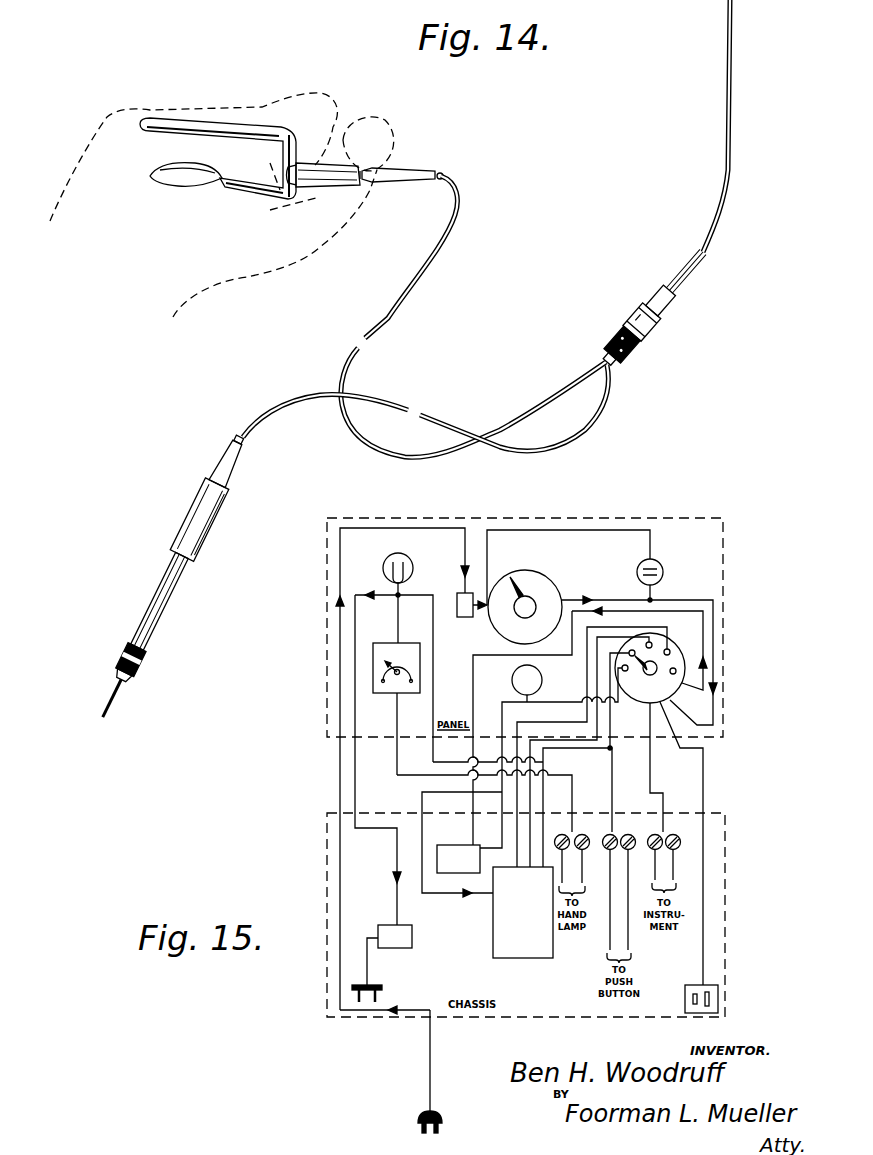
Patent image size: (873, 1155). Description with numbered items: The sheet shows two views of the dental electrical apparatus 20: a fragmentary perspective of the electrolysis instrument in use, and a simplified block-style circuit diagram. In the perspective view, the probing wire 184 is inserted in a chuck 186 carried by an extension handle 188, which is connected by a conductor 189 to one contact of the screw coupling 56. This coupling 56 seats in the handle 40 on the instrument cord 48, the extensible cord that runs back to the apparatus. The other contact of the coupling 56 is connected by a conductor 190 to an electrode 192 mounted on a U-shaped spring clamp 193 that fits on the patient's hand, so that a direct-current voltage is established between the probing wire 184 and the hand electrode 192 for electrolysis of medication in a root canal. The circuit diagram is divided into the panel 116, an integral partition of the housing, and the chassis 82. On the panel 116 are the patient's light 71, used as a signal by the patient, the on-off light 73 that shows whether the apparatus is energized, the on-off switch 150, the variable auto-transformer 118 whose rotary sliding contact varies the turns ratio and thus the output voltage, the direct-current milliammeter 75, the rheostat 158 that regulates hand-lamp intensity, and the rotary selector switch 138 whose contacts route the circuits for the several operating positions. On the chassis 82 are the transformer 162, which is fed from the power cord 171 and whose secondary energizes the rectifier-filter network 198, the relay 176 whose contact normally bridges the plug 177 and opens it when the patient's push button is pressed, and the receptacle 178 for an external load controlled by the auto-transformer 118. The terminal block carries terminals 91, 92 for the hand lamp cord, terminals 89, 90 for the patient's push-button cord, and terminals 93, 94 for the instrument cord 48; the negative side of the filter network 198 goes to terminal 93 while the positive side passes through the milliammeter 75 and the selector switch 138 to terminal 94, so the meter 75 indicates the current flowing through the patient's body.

In FIG. 14, the U-shaped spring clamp 193 is at (207, 120).
In FIG. 14, the electrode 192 is at (188, 183).
In FIG. 14, the conductor 190 is at (437, 266).
In FIG. 14, the instrument cord 48 is at (732, 133).
In FIG. 14, the handle 40 is at (657, 312).
In FIG. 14, the screw coupling 56 is at (632, 348).
In FIG. 14, the conductor 189 is at (603, 407).
In FIG. 14, the extension handle 188 is at (198, 507).
In FIG. 14, the chuck 186 is at (127, 648).
In FIG. 14, the probing wire 184 is at (107, 717).
In FIG. 15, the panel 116 is at (327, 713).
In FIG. 15, the chassis 82 is at (327, 833).
In FIG. 15, the apparatus 20 is at (326, 745).
In FIG. 15, the patient's light 71 is at (385, 560).
In FIG. 15, the on-off switch 150 is at (463, 617).
In FIG. 15, the rheostat 158 is at (407, 643).
In FIG. 15, the variable auto-transformer 118 is at (541, 571).
In FIG. 15, the on-off light 73 is at (664, 565).
In FIG. 15, the milliammeter 75 is at (512, 679).
In FIG. 15, the selector switch 138 is at (649, 680).
In FIG. 15, the filter network 198 is at (445, 845).
In FIG. 15, the transformer 162 is at (535, 944).
In FIG. 15, the relay 176 is at (412, 945).
In FIG. 15, the plug 177 is at (377, 988).
In FIG. 15, the receptacle 178 is at (722, 995).
In FIG. 15, the power cord 171 is at (428, 1070).
In FIG. 15, the terminal 91 is at (560, 835).
In FIG. 15, the terminal 92 is at (580, 835).
In FIG. 15, the terminal 89 is at (608, 835).
In FIG. 15, the terminal 90 is at (627, 835).
In FIG. 15, the terminal 93 is at (655, 835).
In FIG. 15, the terminal 94 is at (673, 835).